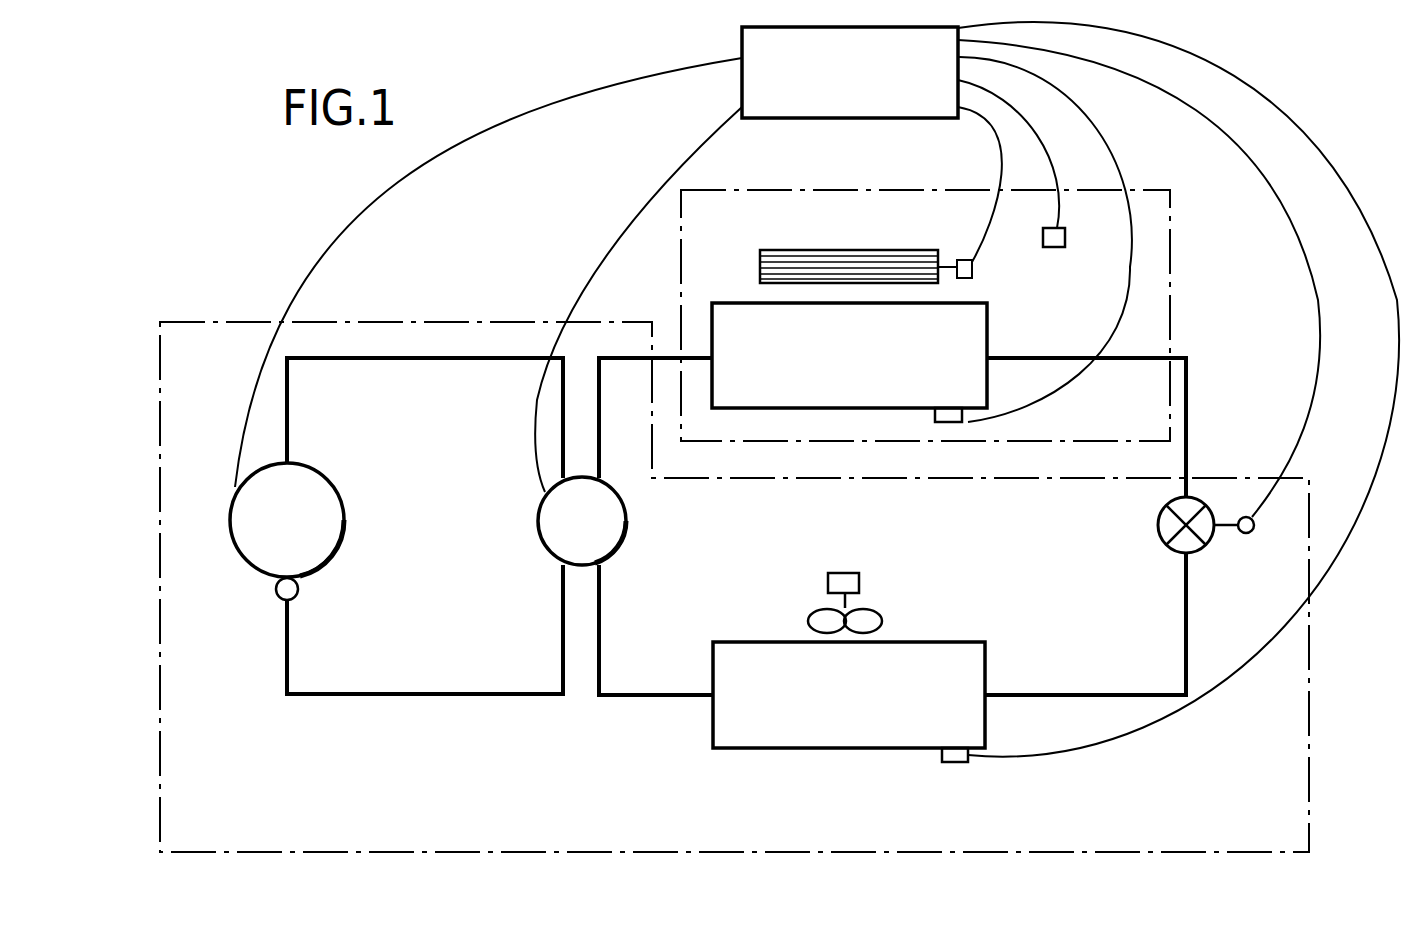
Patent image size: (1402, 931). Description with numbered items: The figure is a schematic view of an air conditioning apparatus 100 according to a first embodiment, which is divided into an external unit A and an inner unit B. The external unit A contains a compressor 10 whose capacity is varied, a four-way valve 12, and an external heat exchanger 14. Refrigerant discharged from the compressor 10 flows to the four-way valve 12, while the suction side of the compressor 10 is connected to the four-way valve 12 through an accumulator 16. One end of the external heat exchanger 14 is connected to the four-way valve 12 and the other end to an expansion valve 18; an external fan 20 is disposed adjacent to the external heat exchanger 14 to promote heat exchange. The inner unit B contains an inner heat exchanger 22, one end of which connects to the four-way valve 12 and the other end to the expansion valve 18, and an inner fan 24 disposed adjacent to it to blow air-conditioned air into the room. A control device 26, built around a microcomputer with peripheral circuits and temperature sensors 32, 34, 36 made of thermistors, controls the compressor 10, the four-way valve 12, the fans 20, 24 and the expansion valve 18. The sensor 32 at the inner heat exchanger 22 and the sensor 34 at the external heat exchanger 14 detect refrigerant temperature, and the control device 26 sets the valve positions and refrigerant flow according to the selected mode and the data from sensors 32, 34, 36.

The compressor 10 is at (343, 545).
The four-way valve 12 is at (613, 555).
The external heat exchanger 14 is at (986, 665).
The accumulator 16 is at (298, 590).
The expansion valve 18 is at (1195, 553).
The external fan 20 is at (860, 588).
The inner heat exchanger 22 is at (987, 310).
The inner fan 24 is at (760, 266).
The control device 26 is at (820, 118).
The temperature sensor 32 is at (935, 415).
The temperature sensor 34 is at (958, 762).
The temperature sensor 36 is at (1066, 236).
The air conditioning apparatus 100 is at (1382, 860).
The external unit A is at (160, 830).
The inner unit B is at (1170, 210).